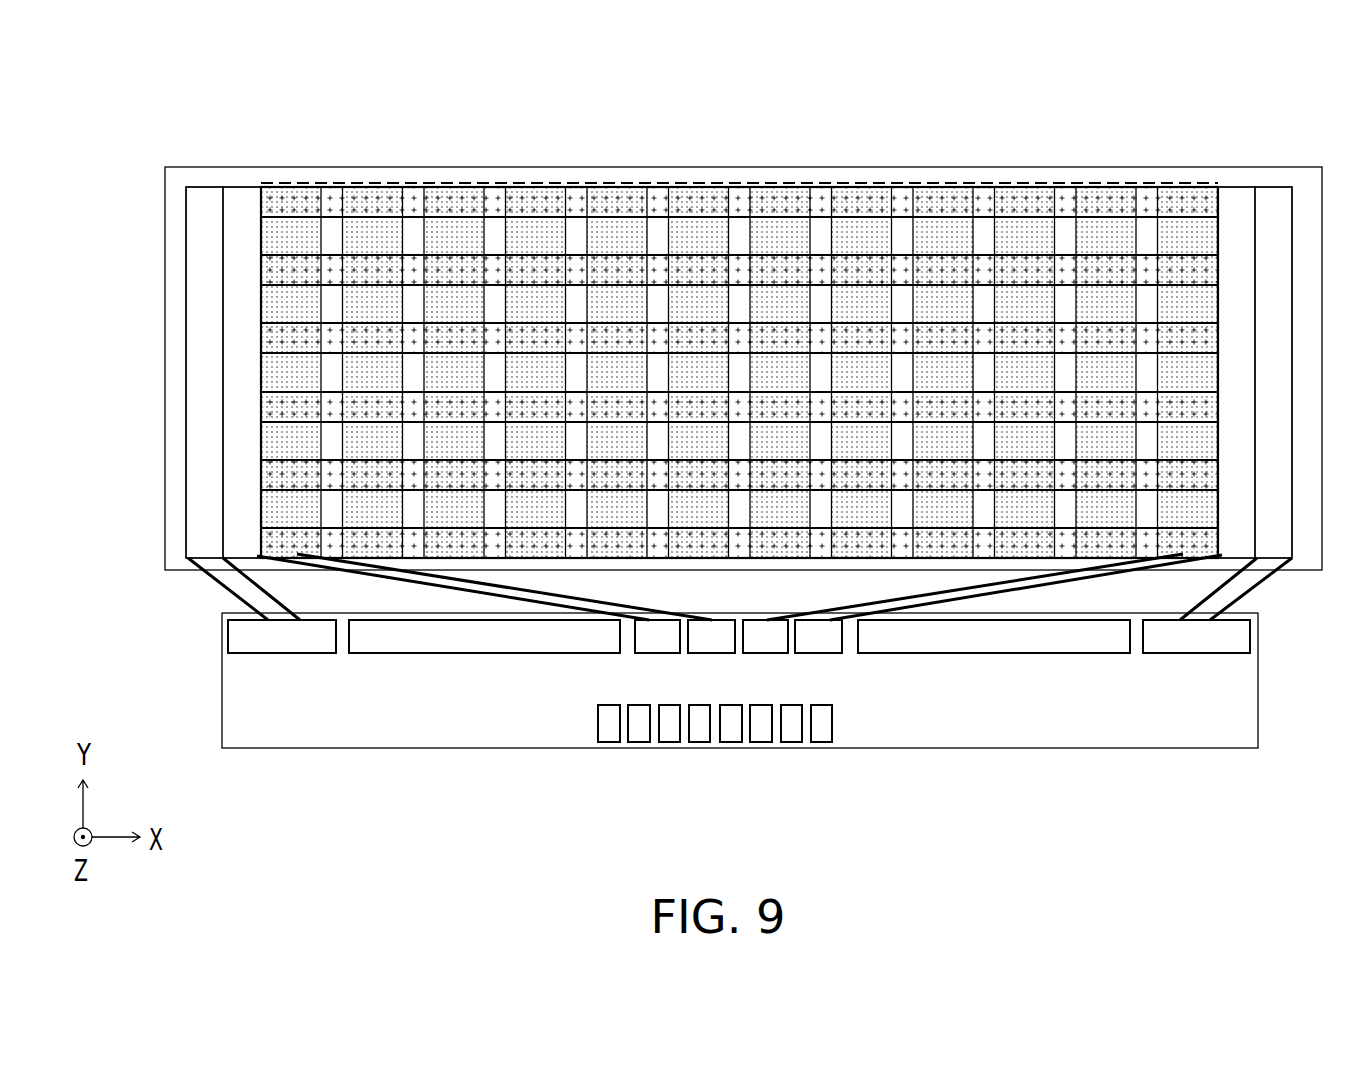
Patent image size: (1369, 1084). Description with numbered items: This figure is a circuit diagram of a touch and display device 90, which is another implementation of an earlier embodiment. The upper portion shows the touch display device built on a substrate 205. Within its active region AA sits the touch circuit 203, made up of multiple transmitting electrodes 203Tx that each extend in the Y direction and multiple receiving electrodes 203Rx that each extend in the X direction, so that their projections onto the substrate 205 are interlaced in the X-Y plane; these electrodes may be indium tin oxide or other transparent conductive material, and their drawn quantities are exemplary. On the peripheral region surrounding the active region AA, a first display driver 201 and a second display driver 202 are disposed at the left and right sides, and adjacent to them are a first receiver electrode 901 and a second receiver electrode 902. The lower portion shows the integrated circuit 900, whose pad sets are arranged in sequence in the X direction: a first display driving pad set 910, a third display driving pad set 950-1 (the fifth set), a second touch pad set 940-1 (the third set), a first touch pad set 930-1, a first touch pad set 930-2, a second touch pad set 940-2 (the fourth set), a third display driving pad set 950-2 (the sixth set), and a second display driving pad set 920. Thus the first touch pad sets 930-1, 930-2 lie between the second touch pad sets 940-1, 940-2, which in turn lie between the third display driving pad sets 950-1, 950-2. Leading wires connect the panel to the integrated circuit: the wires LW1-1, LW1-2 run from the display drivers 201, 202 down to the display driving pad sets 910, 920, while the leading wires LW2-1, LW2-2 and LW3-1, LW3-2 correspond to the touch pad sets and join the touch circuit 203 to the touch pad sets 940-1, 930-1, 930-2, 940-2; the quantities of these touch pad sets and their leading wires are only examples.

The touch and display device 90 is at (1351, 830).
The substrate 205 is at (165, 173).
The first display driver 201 is at (205, 195).
The first receiver electrode 901 is at (243, 195).
The second receiver electrode 902 is at (1238, 195).
The second display driver 202 is at (1273, 195).
The active region AA is at (1052, 178).
The touch circuit 203 is at (739, 326).
The transmitting electrodes 203Tx is at (290, 235).
The receiving electrodes 203Rx is at (417, 200).
The first lead wires to first display driver LW1-1 is at (240, 597).
The first lead wires to second display driver LW1-2 is at (1241, 597).
The leading wire LW2-1 is at (592, 599).
The leading wire LW2-2 is at (910, 596).
The leading wire LW3-1 is at (457, 588).
The leading wire LW3-2 is at (1078, 580).
The circuit board 900 is at (222, 683).
The first display driving pad set 910 is at (290, 653).
The second display driving pad set 920 is at (1200, 653).
The third display driving pad set 950-1 is at (390, 653).
The third display driving pad set 950-2 is at (1037, 653).
The second touch pad set 940-1 is at (637, 653).
The second touch pad set 940-2 is at (840, 653).
The first touch pad set 930-1 is at (707, 653).
The first touch pad set 930-2 is at (757, 653).